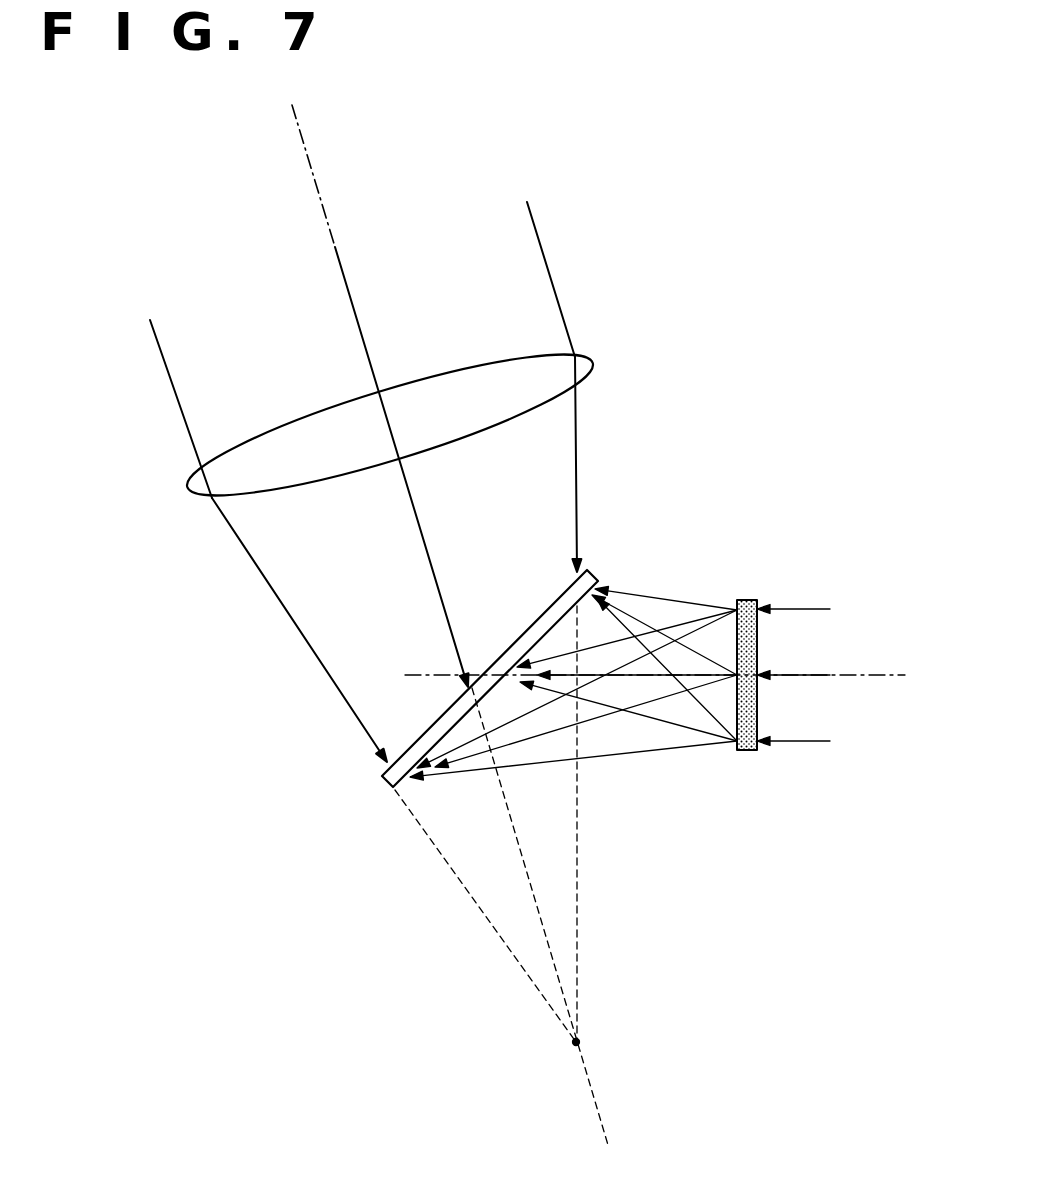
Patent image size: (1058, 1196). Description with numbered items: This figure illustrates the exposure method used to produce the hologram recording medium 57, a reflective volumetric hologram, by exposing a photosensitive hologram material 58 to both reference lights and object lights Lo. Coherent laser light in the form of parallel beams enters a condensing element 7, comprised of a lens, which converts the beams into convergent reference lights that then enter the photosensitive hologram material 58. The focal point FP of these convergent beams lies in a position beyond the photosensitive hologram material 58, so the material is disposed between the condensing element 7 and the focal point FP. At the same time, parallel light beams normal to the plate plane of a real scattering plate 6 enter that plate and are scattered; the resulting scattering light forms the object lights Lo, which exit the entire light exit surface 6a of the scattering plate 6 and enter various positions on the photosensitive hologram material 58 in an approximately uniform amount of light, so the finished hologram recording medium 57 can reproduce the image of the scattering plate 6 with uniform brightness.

The condensing element 7 is at (594, 363).
The photosensitive hologram material 58 is at (596, 574).
The hologram recording medium 57 is at (544, 654).
The scattering plate 6 is at (746, 600).
The light exit surface 6a is at (737, 640).
The object lights Lo is at (723, 677).
The focal point FP is at (582, 1042).